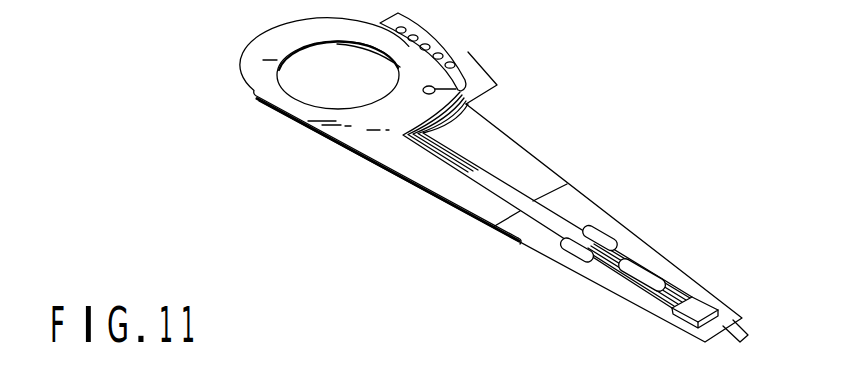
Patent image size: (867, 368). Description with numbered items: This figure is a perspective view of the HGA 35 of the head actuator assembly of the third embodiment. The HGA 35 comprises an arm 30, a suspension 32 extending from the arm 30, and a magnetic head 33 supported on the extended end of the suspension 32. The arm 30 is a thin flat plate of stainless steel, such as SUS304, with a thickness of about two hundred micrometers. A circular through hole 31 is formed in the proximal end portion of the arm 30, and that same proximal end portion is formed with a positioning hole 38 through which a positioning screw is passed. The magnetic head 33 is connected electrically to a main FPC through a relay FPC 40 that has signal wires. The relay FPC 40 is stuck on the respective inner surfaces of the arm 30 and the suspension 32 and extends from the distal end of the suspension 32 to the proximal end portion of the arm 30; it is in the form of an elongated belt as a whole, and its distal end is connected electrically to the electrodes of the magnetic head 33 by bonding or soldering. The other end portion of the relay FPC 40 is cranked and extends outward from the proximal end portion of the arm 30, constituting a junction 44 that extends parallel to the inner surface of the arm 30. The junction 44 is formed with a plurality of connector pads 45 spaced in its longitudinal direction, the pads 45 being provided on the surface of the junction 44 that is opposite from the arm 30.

The arm 30 is at (400, 173).
The circular through hole 31 is at (303, 95).
The suspension 32 is at (615, 233).
The magnetic head 33 is at (695, 306).
The HGA 35 is at (445, 240).
The positioning hole 38 is at (466, 104).
The relay FPC 40 is at (503, 182).
The junction 44 is at (337, 44).
The connector pads 45 is at (408, 24).